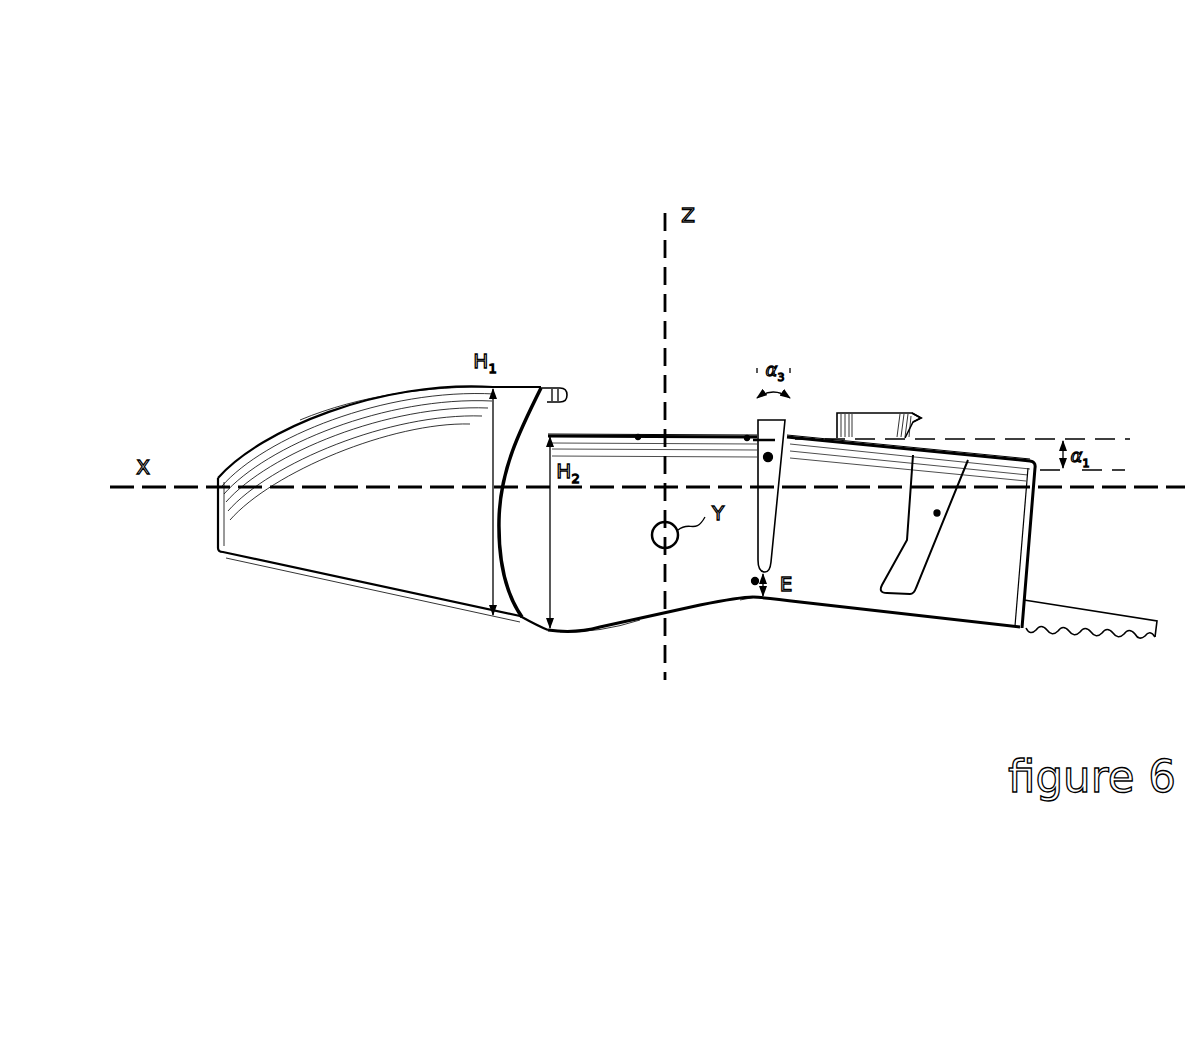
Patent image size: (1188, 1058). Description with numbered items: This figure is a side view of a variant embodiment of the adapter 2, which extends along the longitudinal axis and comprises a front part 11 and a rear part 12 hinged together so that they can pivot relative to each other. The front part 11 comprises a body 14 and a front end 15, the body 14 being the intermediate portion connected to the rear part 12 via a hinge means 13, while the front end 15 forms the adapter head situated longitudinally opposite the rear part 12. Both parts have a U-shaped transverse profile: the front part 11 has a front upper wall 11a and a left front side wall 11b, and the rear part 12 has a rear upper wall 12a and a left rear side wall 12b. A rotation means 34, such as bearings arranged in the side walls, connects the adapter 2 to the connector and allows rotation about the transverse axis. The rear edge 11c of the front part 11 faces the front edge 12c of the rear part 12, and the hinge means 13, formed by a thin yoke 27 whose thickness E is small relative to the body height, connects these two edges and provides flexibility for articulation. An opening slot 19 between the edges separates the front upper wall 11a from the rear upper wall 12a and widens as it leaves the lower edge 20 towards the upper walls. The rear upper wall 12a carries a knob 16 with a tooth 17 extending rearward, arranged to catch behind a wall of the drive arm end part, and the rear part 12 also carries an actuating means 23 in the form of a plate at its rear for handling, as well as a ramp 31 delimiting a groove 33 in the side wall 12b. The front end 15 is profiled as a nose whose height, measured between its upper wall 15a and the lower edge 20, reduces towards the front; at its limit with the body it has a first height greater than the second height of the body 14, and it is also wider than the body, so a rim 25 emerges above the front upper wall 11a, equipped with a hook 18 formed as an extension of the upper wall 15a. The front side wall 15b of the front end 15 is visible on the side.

The adapter 2 is at (773, 674).
The front part 11 is at (432, 266).
The front upper wall 11a is at (636, 436).
The left front side wall 11b is at (603, 550).
The rear edge 11c is at (752, 533).
The rear part 12 is at (940, 300).
The rear upper wall 12a is at (818, 437).
The left rear side wall 12b is at (860, 524).
The front edge 12c is at (778, 532).
The hinge means 13 is at (766, 613).
The body 14 is at (643, 336).
The front end 15 is at (362, 359).
The upper wall of the front end 15a is at (515, 387).
The front side wall of the front end 15b is at (393, 539).
The knob 16 is at (873, 411).
The tooth 17 is at (920, 416).
The hook 18 is at (563, 387).
The opening slot 19 is at (762, 433).
The lower edge 20 is at (695, 610).
The actuating means 23 is at (1113, 610).
The rim 25 is at (493, 467).
The left yoke 27 is at (755, 584).
The ramp 31 is at (900, 560).
The groove 33 is at (937, 513).
The rotation means 34 is at (656, 546).